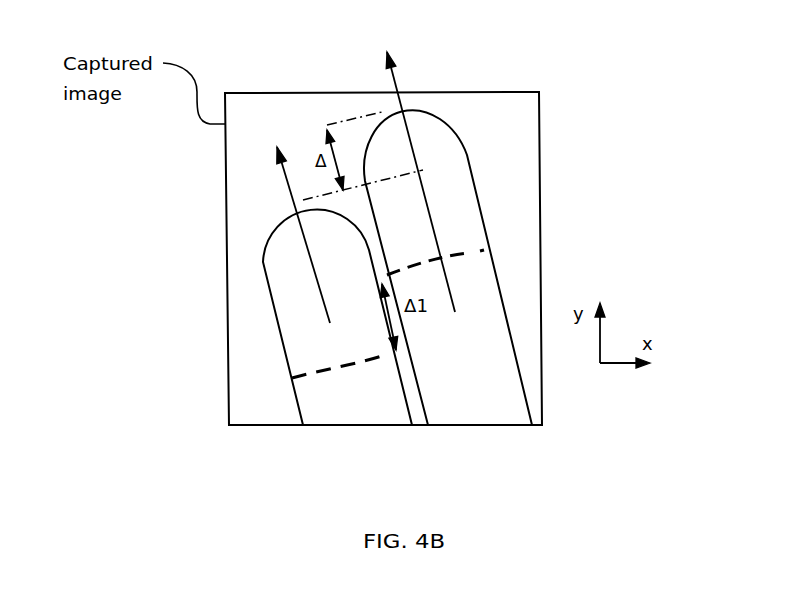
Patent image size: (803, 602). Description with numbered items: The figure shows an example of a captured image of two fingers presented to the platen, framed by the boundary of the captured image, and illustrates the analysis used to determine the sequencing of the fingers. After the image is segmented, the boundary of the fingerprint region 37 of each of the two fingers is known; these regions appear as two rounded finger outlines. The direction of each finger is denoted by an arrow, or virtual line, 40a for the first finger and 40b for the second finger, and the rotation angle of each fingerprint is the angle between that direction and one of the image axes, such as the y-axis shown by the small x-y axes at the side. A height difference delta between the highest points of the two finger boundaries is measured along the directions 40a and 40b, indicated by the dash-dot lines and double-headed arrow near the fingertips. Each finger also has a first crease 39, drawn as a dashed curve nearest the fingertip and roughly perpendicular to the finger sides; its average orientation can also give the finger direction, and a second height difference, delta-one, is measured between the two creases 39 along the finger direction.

The fingerprint region 37 is at (384, 267).
The first crease 39 is at (435, 378).
The finger 1 direction arrow 40a is at (430, 50).
The finger 2 direction arrow 40b is at (225, 234).